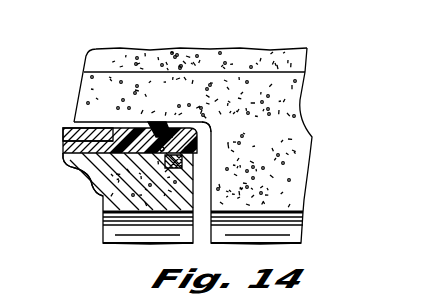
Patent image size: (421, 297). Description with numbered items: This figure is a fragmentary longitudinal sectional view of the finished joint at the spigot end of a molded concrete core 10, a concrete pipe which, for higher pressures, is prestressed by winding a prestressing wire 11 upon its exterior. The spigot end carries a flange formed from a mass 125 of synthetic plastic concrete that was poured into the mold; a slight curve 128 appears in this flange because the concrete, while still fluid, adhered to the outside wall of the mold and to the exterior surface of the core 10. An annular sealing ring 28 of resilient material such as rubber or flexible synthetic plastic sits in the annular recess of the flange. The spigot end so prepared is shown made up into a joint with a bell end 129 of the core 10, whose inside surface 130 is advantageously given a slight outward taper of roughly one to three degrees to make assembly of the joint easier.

The molded concrete core 10 is at (103, 190).
The prestressing wire 11 is at (63, 160).
The annular sealing ring 28 is at (158, 122).
The mass of fluid concrete 125 is at (85, 143).
The slight curve 128 is at (112, 129).
The bell end 129 is at (204, 78).
The inside surface of the bell end 130 is at (213, 126).